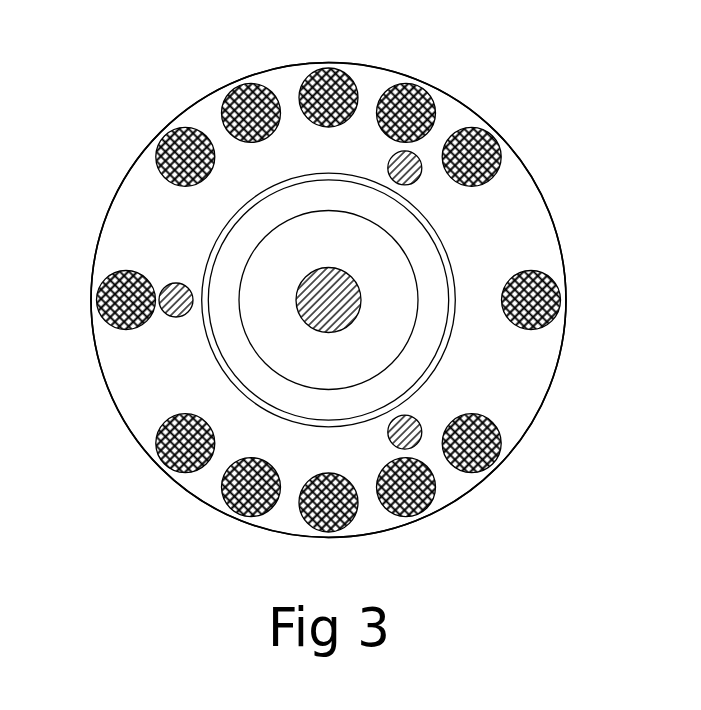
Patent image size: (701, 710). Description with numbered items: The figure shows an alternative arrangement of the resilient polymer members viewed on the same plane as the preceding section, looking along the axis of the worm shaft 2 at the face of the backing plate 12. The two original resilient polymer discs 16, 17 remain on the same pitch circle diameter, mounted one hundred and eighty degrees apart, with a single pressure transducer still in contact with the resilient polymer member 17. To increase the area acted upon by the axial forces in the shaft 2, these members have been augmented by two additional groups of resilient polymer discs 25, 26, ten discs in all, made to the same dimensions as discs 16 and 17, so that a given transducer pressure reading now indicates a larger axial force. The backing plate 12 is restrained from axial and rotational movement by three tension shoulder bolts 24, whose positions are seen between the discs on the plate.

The worm shaft 2 is at (343, 283).
The backing plate 12 is at (155, 382).
The resilient polymer disc 16 is at (116, 279).
The resilient polymer disc 17 is at (552, 322).
The tension shoulder bolts 24 is at (170, 282).
The group of resilient polymer discs 25 is at (368, 73).
The group of resilient polymer discs 26 is at (202, 488).